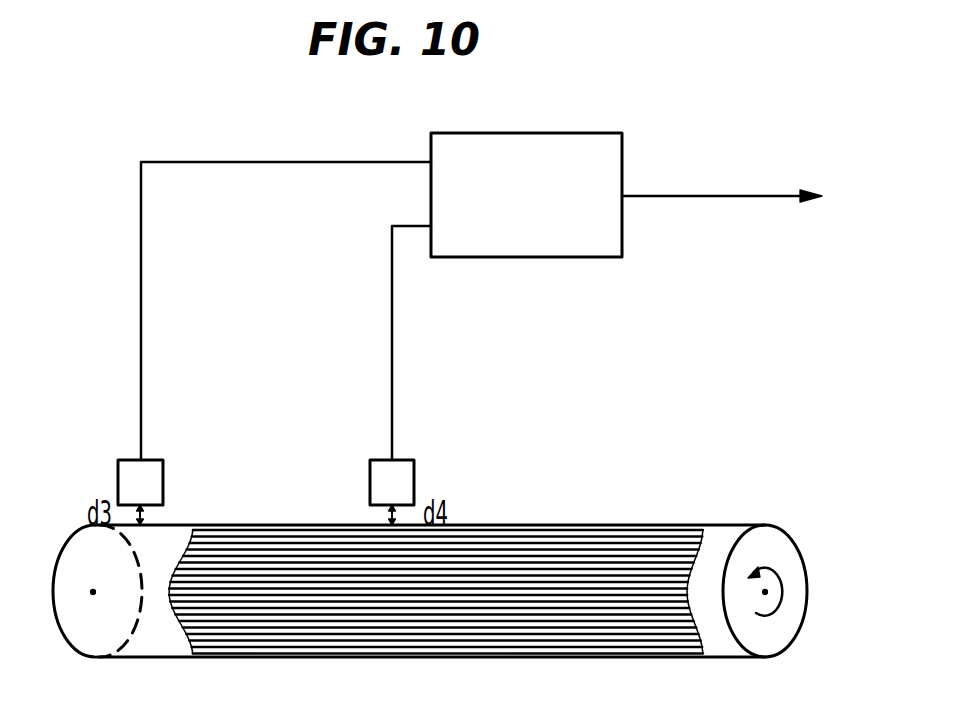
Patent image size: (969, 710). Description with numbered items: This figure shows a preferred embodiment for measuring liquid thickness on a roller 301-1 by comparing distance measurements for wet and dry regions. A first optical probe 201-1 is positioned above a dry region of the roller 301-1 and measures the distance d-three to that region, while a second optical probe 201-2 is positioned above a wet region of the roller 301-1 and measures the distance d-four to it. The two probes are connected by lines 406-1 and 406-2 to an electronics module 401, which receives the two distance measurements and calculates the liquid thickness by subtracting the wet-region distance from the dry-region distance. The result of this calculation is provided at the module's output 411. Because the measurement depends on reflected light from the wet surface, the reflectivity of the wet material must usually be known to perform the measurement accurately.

The electronics module 401 is at (622, 153).
The output signal line 411 is at (700, 196).
The sensor cable 406-1 is at (141, 352).
The sensor cable 406-2 is at (392, 385).
The optical probe 201-1 is at (163, 473).
The optical probe 201-2 is at (414, 470).
The roller 301-1 is at (806, 617).